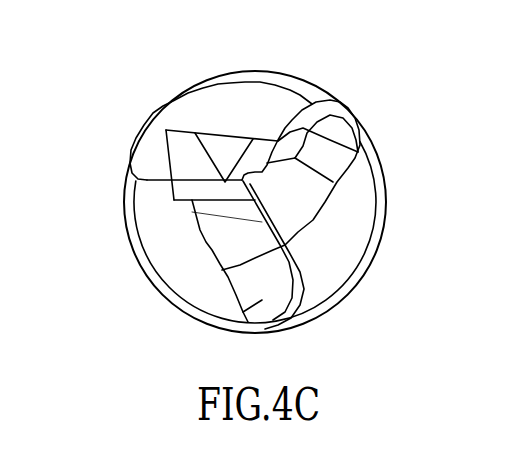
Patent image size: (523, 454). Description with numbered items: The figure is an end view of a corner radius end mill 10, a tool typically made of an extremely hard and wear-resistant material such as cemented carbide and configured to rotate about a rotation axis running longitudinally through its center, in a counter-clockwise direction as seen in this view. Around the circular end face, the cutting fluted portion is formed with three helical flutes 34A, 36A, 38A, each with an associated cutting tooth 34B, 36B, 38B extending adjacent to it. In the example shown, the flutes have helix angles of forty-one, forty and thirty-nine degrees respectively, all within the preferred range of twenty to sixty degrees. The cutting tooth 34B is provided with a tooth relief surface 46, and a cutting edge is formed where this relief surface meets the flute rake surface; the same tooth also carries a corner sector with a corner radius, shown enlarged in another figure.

The corner radius end mill 10 is at (390, 64).
The helical flute 34A is at (154, 261).
The cutting tooth 34B is at (142, 165).
The helical flute 36A is at (341, 281).
The cutting tooth 36B is at (309, 269).
The helical flute 38A is at (221, 99).
The cutting tooth 38B is at (291, 148).
The tooth relief surface 46 is at (215, 151).